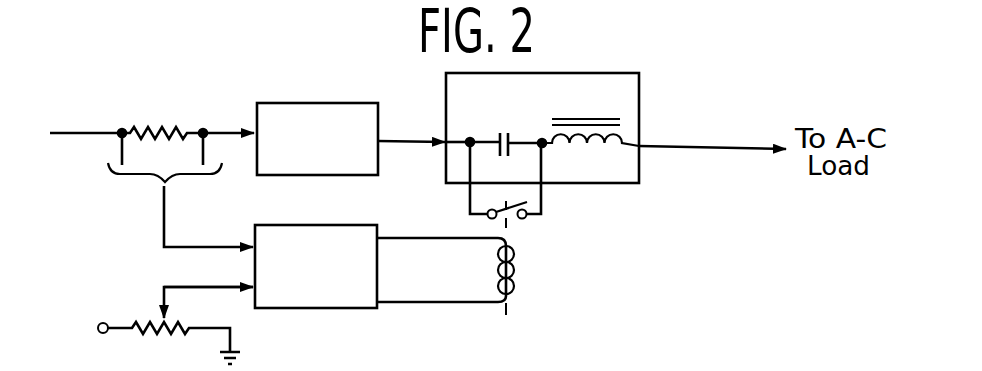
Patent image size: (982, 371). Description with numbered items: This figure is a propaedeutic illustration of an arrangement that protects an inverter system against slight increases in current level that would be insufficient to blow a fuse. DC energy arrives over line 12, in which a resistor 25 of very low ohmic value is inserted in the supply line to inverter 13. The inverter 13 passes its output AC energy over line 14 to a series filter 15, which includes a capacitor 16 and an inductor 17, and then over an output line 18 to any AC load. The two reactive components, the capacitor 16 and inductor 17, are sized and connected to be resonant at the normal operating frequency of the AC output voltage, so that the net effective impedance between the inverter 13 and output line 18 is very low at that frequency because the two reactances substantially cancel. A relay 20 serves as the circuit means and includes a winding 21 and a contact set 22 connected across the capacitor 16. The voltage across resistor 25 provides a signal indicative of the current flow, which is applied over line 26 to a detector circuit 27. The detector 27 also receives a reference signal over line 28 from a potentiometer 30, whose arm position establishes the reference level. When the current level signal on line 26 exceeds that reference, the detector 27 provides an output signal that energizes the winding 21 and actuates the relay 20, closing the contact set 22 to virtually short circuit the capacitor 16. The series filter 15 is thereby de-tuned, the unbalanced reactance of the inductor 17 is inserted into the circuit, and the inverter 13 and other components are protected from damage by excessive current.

The line 12 is at (181, 144).
The inverter 13 is at (317, 127).
The line 14 is at (411, 129).
The series filter 15 is at (542, 116).
The capacitor 16 is at (506, 132).
The inductor 17 is at (590, 147).
The output line 18 is at (712, 136).
The relay 20 is at (479, 228).
The winding 21 is at (446, 276).
The contact set 22 is at (494, 228).
The resistor 25 is at (160, 121).
The line 26 is at (208, 216).
The detector circuit 27 is at (316, 253).
The line 28 is at (208, 302).
The potentiometer 30 is at (159, 339).